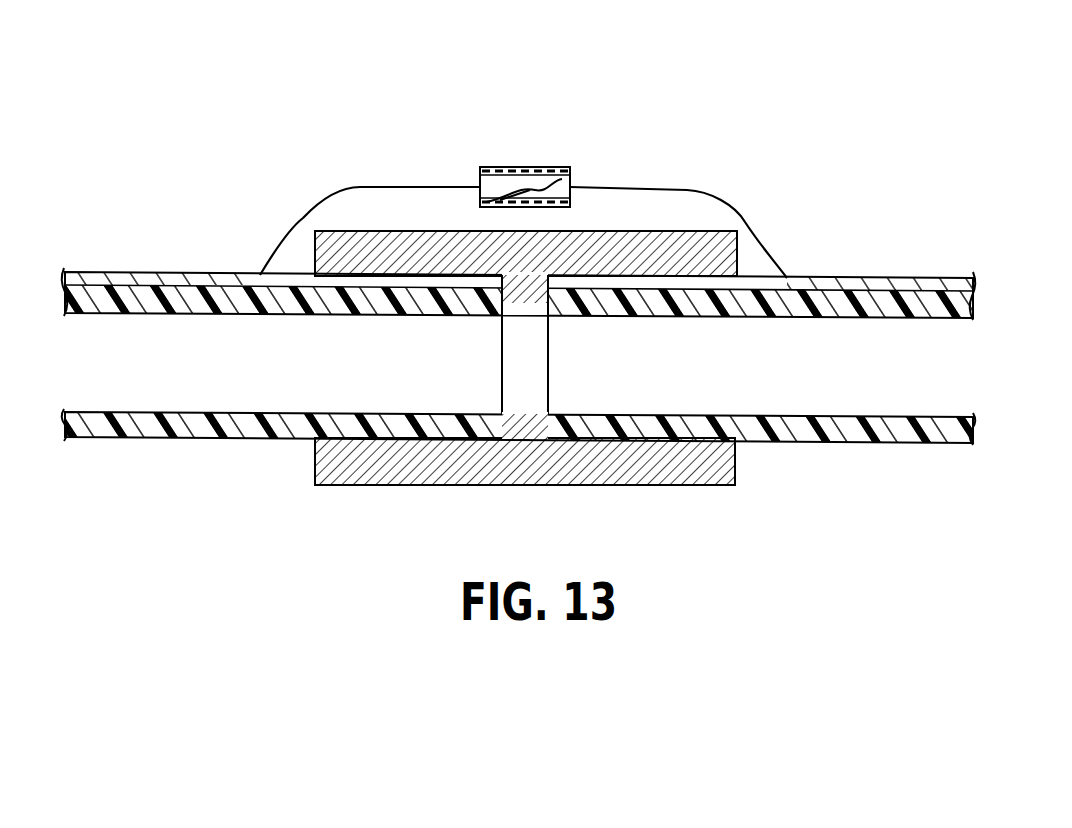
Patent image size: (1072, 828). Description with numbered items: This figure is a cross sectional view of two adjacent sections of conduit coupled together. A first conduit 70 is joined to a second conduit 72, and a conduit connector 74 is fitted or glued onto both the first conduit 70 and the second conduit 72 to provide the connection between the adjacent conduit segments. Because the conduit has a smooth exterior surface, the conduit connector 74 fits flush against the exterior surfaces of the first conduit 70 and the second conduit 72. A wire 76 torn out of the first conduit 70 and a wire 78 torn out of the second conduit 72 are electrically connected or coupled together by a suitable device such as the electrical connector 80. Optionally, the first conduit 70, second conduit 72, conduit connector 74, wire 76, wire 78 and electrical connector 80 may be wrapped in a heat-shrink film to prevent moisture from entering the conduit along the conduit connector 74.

The first conduit 70 is at (145, 437).
The second conduit 72 is at (955, 281).
The conduit connector 74 is at (735, 467).
The wire 76 is at (330, 200).
The wire 78 is at (745, 222).
The electrical connector 80 is at (515, 170).